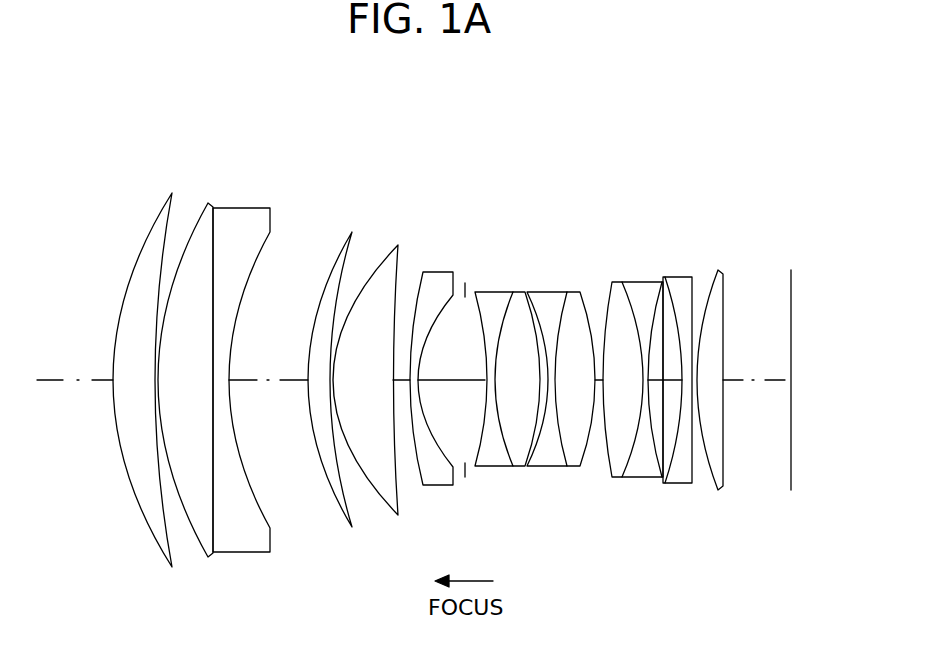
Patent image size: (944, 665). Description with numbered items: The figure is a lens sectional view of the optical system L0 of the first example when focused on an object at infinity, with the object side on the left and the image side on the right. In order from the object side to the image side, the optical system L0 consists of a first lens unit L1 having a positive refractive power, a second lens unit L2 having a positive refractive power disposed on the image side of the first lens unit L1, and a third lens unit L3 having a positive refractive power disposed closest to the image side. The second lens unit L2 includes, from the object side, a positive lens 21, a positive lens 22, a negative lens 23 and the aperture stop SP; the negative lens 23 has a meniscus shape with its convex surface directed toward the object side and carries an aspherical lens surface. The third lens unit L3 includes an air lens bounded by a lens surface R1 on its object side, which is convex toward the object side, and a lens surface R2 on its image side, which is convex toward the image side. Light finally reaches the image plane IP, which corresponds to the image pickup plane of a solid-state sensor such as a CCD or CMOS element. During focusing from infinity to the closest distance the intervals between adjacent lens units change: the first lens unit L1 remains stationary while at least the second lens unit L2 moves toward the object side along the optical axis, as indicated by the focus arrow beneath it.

The optical system L0 is at (740, 112).
The first lens unit L1 is at (287, 183).
The second lens unit L2 is at (588, 533).
The third lens unit L3 is at (732, 183).
The positive lens 21 is at (357, 231).
The positive lens 22 is at (400, 247).
The negative lens 23 is at (462, 272).
The aperture stop SP is at (467, 477).
The lens surface R1 is at (653, 308).
The lens surface R2 is at (681, 304).
The image plane IP is at (791, 287).